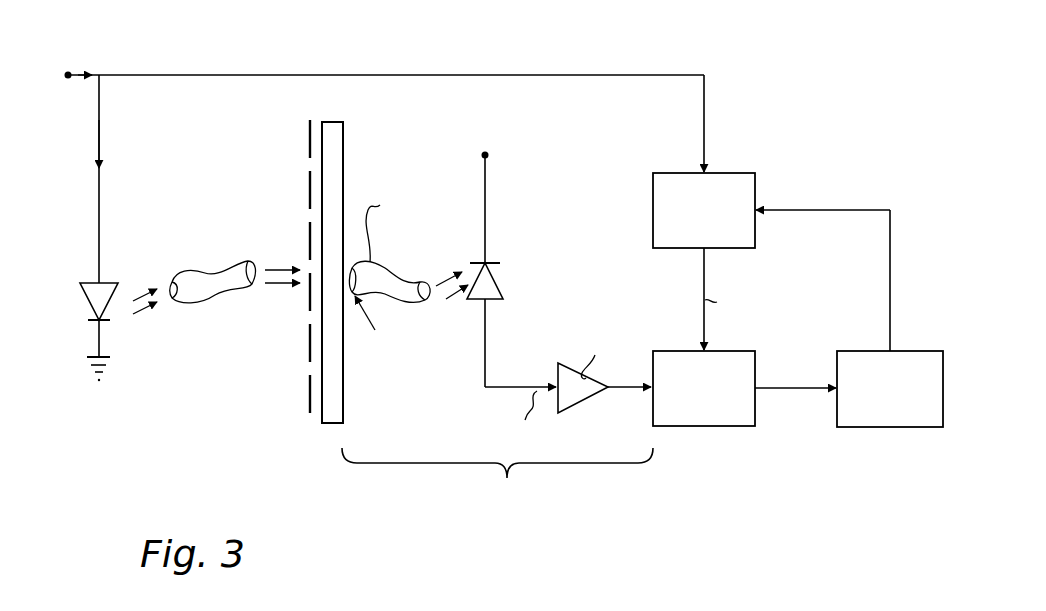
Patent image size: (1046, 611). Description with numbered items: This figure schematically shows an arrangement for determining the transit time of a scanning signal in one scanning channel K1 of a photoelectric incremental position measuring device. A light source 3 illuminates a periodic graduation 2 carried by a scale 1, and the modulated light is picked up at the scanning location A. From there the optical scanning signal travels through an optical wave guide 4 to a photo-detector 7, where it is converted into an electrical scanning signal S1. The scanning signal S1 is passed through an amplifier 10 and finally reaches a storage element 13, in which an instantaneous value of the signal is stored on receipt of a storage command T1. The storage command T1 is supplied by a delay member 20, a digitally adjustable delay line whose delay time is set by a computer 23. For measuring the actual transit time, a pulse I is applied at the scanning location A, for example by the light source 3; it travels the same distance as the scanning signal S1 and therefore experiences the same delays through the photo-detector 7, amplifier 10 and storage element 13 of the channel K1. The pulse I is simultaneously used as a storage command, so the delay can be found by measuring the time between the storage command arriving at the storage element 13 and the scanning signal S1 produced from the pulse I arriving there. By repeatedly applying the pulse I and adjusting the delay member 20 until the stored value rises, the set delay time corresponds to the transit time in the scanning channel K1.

The pulse I is at (82, 75).
The scale 1 is at (344, 131).
The graduation 2 is at (308, 135).
The light source 3 is at (110, 282).
The optical wave guide 4 is at (394, 265).
The photo-detector 7 is at (500, 282).
The amplifier 10 is at (590, 400).
The storage element 13 is at (728, 426).
The delay member 20 is at (744, 173).
The computer 23 is at (854, 351).
The scanning location A is at (372, 323).
The electrical scanning signal S1 is at (520, 410).
The storage command T1 is at (722, 299).
The scanning channel K1 is at (497, 480).